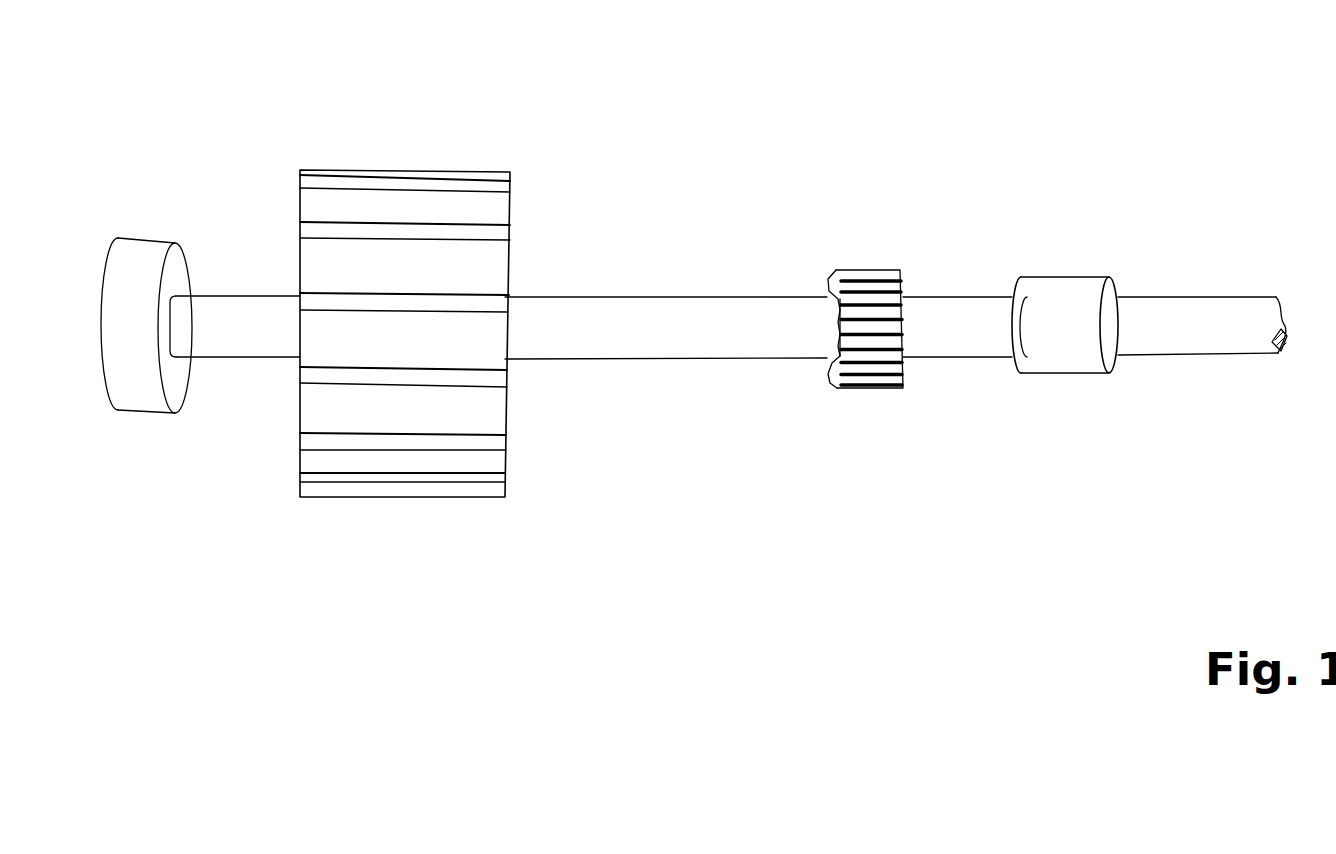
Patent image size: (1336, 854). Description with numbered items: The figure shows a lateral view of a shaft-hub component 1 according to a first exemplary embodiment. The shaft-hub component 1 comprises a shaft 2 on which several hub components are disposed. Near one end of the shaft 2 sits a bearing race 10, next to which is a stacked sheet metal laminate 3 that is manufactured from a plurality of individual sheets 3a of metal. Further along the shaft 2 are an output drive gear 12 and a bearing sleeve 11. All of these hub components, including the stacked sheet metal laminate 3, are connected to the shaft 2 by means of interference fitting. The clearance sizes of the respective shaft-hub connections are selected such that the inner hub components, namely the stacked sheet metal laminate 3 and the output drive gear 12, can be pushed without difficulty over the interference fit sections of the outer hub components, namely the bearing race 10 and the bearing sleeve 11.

The shaft-hub component 1 is at (297, 100).
The shaft 2 is at (697, 345).
The stacked sheet metal laminate 3 is at (353, 505).
The individual sheets 3a is at (408, 463).
The bearing race 10 is at (145, 395).
The bearing sleeve 11 is at (1072, 297).
The output drive gear 12 is at (872, 270).